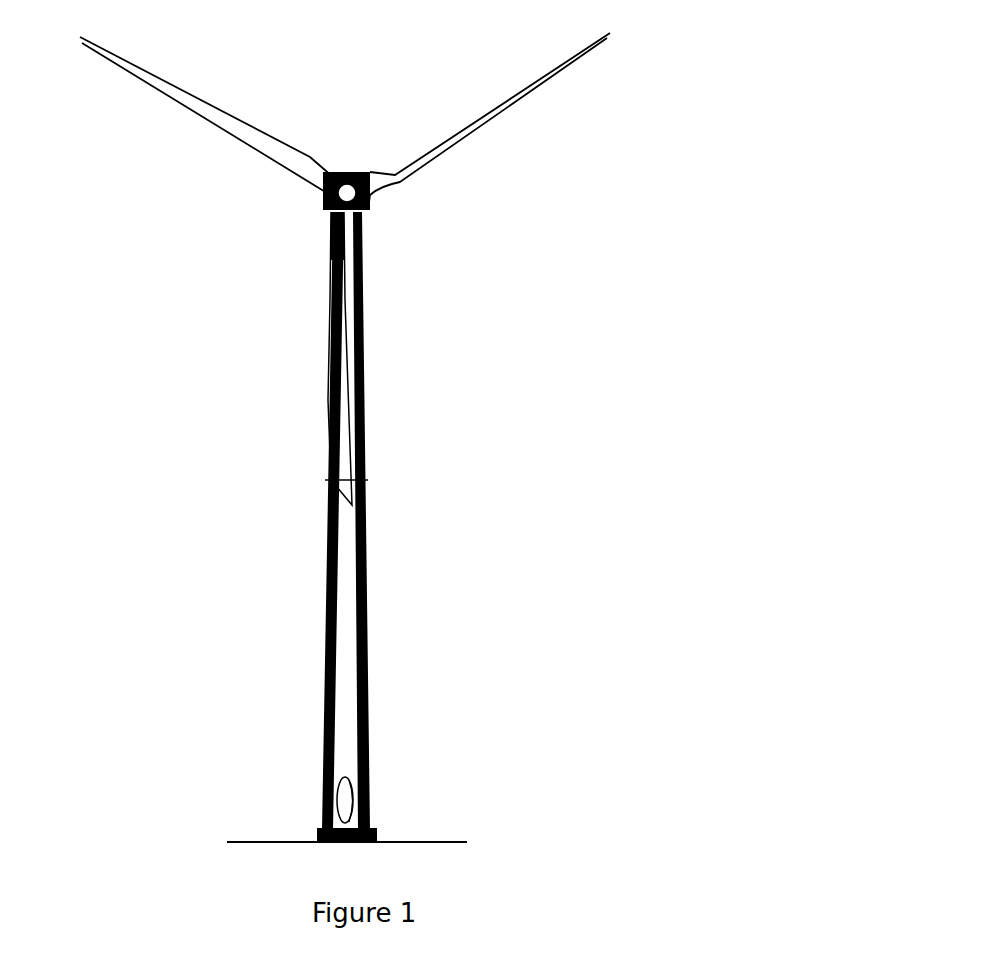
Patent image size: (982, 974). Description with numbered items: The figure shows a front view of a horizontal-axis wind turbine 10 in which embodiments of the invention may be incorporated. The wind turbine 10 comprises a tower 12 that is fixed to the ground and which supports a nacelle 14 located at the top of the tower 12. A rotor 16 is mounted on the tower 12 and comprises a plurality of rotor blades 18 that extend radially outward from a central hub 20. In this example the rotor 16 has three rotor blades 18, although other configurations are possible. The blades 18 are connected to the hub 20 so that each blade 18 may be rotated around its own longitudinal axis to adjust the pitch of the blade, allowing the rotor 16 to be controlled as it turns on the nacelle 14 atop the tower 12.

The wind turbine 10 is at (104, 665).
The tower 12 is at (367, 583).
The nacelle 14 is at (345, 172).
The rotor 16 is at (397, 214).
The rotor blade 18 is at (547, 78).
The central hub 20 is at (347, 192).